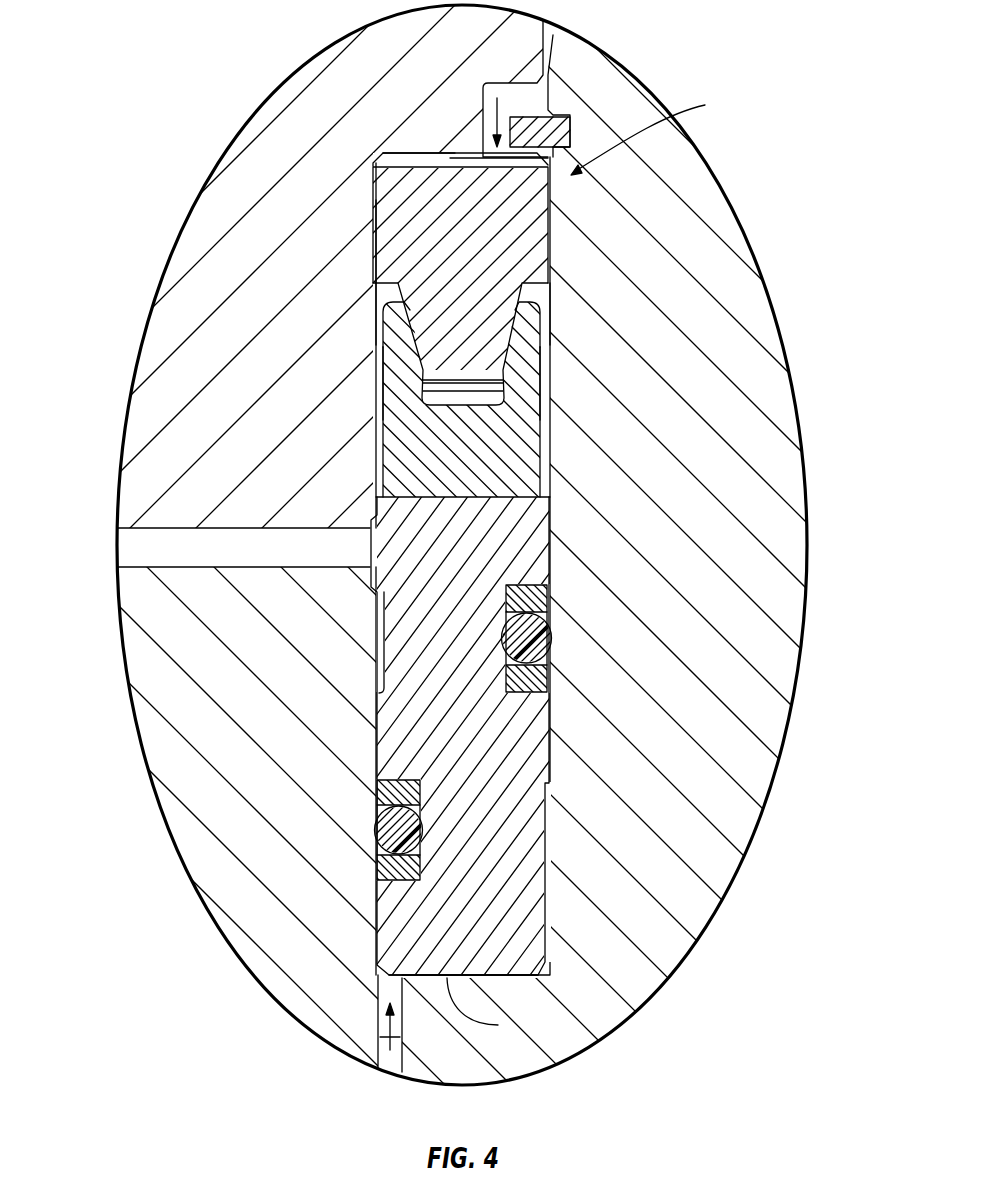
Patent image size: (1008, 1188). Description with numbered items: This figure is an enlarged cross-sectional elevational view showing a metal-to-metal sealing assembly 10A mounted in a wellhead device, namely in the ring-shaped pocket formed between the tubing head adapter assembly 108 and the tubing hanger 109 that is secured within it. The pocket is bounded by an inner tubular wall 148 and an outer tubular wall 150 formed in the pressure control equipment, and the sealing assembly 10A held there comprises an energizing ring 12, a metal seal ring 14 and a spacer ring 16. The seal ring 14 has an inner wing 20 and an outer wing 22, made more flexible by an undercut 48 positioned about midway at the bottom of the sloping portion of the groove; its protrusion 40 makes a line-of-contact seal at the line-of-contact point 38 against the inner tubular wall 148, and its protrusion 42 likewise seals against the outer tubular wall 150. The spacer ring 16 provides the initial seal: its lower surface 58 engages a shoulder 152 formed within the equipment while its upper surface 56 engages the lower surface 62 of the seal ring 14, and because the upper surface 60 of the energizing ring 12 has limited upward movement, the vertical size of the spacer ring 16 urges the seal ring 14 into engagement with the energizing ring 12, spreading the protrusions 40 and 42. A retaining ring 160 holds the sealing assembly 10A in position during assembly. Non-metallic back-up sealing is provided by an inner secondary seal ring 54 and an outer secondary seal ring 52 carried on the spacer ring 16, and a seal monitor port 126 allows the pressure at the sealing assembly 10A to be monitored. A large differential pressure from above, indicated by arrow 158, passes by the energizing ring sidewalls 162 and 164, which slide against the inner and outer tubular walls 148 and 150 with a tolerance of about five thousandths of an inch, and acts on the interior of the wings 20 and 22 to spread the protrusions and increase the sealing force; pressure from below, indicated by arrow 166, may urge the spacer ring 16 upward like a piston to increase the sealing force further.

The metal-to-metal sealing assembly 10A is at (662, 132).
The energizing ring 12 is at (457, 237).
The seal ring 14 is at (460, 450).
The spacer ring 16 is at (462, 708).
The inner wing 20 is at (540, 377).
The outer wing 22 is at (393, 378).
The line-of-contact point 38 is at (527, 320).
The protrusion 40 is at (548, 313).
The protrusion 42 is at (390, 315).
The undercut 48 is at (442, 400).
The outer secondary seal ring 52 is at (393, 820).
The inner secondary seal ring 54 is at (533, 638).
The upper surface of spacer ring 56 is at (503, 500).
The lower surface of spacer ring 58 is at (423, 977).
The upper surface of energizing ring 60 is at (458, 162).
The lower surface of seal ring 62 is at (527, 495).
The tubing head adapter assembly 108 is at (217, 413).
The tubing hanger 109 is at (707, 457).
The seal monitor port 126 is at (227, 547).
The inner tubular wall 148 is at (377, 467).
The outer tubular wall 150 is at (407, 337).
The shoulder 152 is at (498, 1008).
The arrow 158 is at (510, 108).
The retaining ring 160 is at (555, 135).
The energizing ring sidewall 162 is at (376, 247).
The energizing ring sidewall 164 is at (540, 240).
The arrow 166 is at (387, 1027).